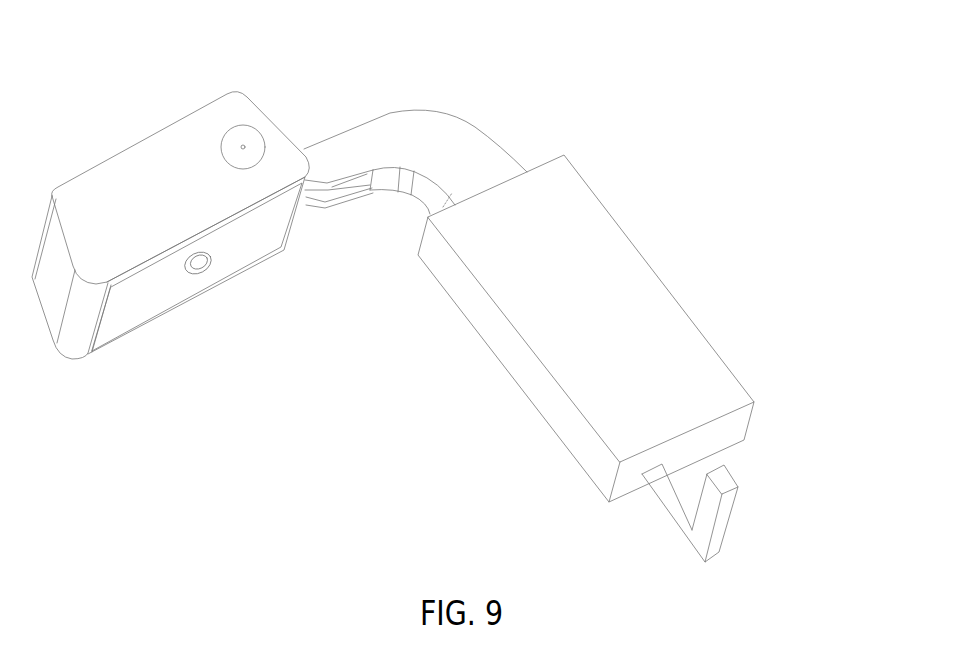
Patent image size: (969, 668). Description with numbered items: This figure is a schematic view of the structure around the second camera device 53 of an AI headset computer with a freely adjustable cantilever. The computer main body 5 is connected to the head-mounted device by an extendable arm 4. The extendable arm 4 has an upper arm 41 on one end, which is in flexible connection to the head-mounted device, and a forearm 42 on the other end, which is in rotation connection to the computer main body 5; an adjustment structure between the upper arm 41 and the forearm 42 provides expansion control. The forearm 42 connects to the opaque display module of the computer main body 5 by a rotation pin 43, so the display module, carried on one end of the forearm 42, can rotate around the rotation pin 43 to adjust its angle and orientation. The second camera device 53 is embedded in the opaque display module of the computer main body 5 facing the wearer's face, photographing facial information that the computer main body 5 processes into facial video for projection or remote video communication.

The extendable arm 4 is at (626, 310).
The upper arm 41 is at (733, 522).
The forearm 42 is at (448, 115).
The rotation pin 43 is at (246, 146).
The computer main body 5 is at (162, 175).
The second camera device 53 is at (200, 268).